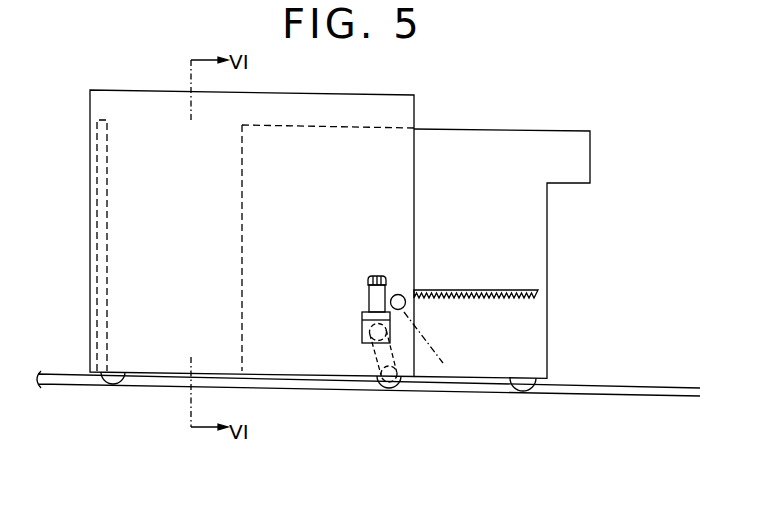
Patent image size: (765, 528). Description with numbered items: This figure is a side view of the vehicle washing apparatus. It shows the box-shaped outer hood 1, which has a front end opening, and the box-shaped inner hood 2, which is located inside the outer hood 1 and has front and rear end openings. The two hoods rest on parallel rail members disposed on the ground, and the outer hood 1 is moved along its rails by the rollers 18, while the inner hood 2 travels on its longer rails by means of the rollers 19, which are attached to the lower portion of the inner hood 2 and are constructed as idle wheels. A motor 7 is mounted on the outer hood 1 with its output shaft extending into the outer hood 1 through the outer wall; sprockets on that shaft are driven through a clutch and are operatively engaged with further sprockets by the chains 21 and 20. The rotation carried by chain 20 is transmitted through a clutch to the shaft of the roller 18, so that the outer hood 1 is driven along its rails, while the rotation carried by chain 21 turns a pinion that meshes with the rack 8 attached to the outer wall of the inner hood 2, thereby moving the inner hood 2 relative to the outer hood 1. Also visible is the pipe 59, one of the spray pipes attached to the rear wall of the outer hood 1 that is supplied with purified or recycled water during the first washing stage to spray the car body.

The outer hood 1 is at (378, 105).
The inner hood 2 is at (503, 142).
The motor 7 is at (372, 297).
The rack 8 is at (518, 288).
The roller 18 is at (112, 388).
The roller 19 is at (532, 390).
The chain 20 is at (393, 355).
The chain 21 is at (403, 309).
The pipe 59 is at (94, 250).